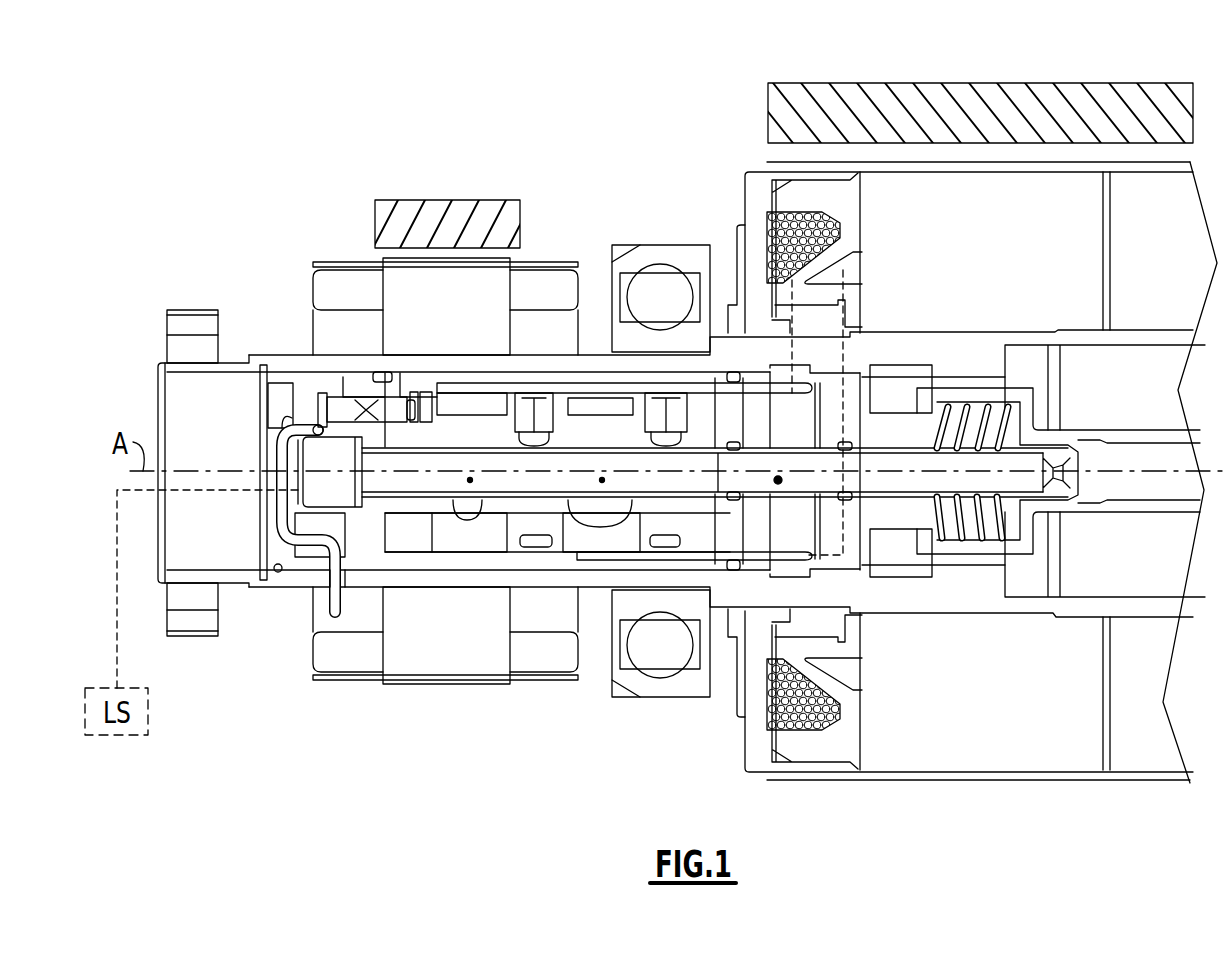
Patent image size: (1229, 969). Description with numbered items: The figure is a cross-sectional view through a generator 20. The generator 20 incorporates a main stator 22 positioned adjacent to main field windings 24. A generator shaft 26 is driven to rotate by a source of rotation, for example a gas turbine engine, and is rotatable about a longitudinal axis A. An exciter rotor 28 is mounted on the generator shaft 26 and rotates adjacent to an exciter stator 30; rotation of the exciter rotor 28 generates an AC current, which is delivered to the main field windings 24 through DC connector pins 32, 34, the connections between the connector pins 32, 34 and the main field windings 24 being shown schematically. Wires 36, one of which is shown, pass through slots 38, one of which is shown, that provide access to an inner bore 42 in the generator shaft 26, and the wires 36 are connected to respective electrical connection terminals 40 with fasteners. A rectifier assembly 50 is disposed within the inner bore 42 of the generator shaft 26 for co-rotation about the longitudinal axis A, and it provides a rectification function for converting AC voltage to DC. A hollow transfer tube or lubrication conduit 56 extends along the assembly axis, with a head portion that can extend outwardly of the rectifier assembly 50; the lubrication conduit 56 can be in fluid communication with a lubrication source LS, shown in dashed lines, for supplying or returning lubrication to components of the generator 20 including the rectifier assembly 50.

The generator 20 is at (233, 165).
The main stator 22 is at (958, 112).
The main field windings 24 is at (982, 259).
The generator shaft 26 is at (738, 593).
The exciter rotor 28 is at (462, 321).
The exciter stator 30 is at (433, 200).
The DC connector pin 32 is at (608, 556).
The DC connector pin 34 is at (607, 392).
The wire 36 is at (283, 527).
The slot 38 is at (342, 583).
The electrical connection terminal 40 is at (337, 400).
The inner bore 42 is at (282, 575).
The rectifier assembly 50 is at (402, 352).
The lubrication conduit 56 is at (850, 480).